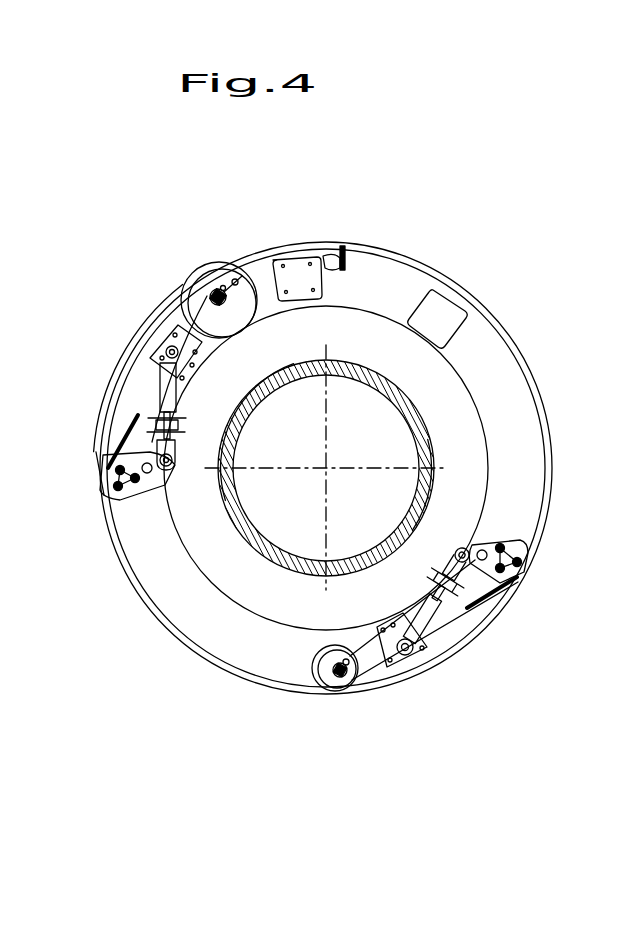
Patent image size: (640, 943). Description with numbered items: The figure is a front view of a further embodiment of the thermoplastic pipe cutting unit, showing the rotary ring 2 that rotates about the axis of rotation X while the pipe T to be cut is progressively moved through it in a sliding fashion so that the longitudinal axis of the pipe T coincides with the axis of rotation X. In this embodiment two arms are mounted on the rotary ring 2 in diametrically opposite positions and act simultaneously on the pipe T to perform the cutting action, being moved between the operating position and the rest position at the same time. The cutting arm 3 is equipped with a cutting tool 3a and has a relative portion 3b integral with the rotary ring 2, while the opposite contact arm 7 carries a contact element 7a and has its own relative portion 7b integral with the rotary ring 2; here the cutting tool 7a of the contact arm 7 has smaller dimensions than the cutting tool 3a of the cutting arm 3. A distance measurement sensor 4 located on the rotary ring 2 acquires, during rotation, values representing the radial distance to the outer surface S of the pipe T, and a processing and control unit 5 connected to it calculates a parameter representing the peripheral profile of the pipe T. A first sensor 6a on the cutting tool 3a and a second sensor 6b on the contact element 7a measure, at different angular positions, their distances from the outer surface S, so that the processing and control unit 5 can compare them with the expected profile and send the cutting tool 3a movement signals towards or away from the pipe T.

The rotary ring 2 is at (203, 616).
The cutting arm 3 is at (157, 337).
The cutting tool 3a is at (190, 262).
The relative portion 3b is at (158, 340).
The distance measurement sensor 4 is at (344, 245).
The processing and control unit 5 is at (436, 309).
The first sensor 6a is at (220, 290).
The second sensor 6b is at (330, 692).
The contact arm 7 is at (424, 658).
The contact element 7a is at (325, 675).
The relative portion 7b is at (407, 660).
The pipe T is at (408, 392).
The outer surface S is at (440, 425).
The axis of rotation X is at (323, 468).